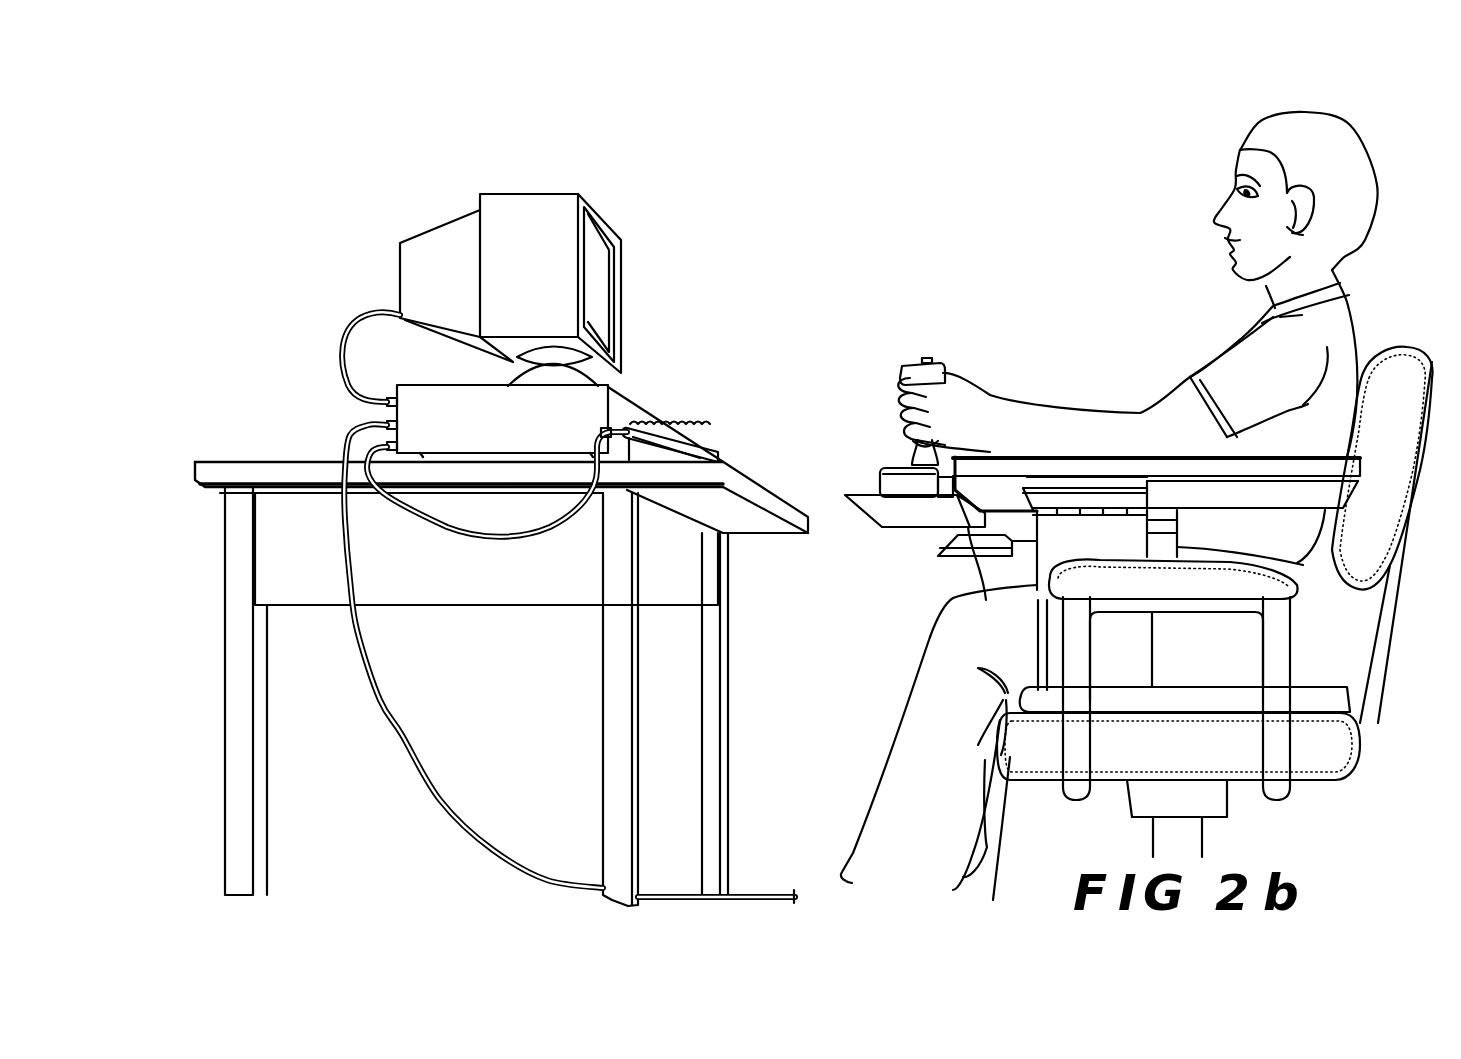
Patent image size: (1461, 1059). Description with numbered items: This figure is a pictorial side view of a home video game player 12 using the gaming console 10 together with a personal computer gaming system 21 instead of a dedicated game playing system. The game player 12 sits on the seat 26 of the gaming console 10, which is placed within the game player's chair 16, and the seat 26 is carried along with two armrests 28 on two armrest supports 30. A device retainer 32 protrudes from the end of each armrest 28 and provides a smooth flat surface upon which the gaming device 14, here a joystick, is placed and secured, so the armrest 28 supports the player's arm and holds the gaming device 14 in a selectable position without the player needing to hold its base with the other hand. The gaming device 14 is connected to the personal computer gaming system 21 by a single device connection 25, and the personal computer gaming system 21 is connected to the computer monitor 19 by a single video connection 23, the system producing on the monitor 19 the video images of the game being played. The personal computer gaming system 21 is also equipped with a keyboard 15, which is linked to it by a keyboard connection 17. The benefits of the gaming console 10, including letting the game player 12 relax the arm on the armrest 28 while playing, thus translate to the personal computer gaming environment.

The gaming console 10 is at (1088, 449).
The game player 12 is at (1240, 150).
The gaming device 14 is at (916, 362).
The keyboard 15 is at (697, 437).
The chair 16 is at (1227, 560).
The keyboard connection 17 is at (476, 530).
The computer monitor 19 is at (530, 210).
The personal computer gaming system 21 is at (587, 413).
The video connection 23 is at (359, 328).
The device connection 25 is at (402, 737).
The seat 26 is at (1340, 707).
The armrest 28 is at (1022, 530).
The armrest support 30 is at (1133, 628).
The device retainer 32 is at (887, 518).